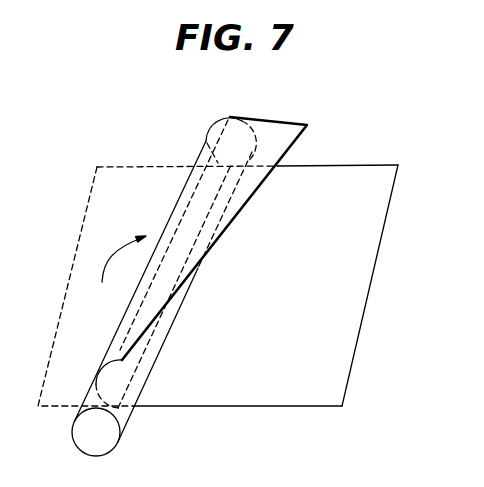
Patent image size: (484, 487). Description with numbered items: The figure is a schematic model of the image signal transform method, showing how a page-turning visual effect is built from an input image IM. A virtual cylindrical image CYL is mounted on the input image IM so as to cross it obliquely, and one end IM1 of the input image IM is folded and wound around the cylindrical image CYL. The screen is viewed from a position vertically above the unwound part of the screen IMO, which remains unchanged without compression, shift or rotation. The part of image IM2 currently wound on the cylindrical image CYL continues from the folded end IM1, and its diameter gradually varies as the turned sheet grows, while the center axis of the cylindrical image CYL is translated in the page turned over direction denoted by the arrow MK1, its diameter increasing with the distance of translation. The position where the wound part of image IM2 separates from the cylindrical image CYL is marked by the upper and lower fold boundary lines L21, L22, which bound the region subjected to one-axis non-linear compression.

The input image IM is at (303, 395).
The unwound part of the screen IMO is at (357, 317).
The end of the input image IM1 is at (300, 128).
The part of image wound on the cylindrical image IM2 is at (120, 335).
The virtual cylindrical image CYL is at (132, 420).
The upper fold boundary line L21 is at (202, 180).
The lower fold boundary line L22 is at (133, 380).
The arrow indicating page turned over direction MK1 is at (120, 245).